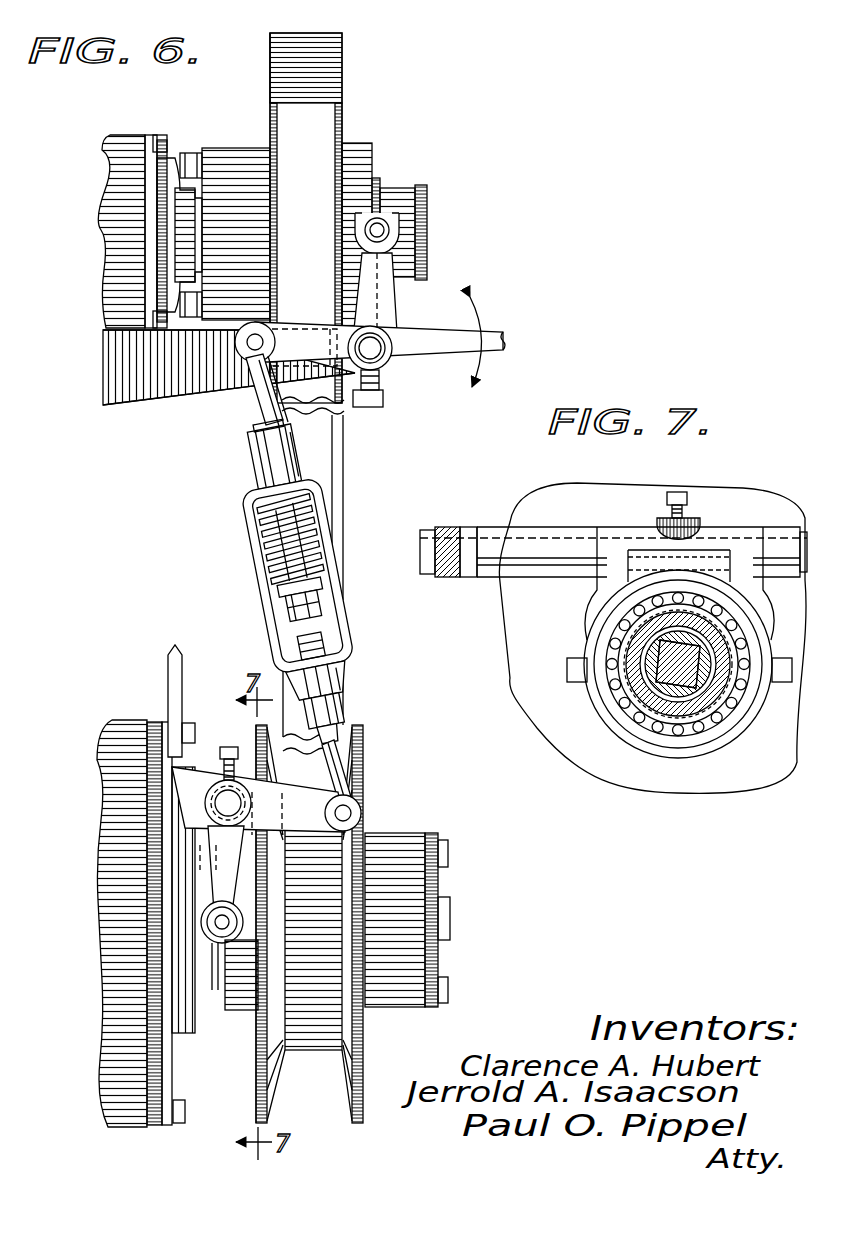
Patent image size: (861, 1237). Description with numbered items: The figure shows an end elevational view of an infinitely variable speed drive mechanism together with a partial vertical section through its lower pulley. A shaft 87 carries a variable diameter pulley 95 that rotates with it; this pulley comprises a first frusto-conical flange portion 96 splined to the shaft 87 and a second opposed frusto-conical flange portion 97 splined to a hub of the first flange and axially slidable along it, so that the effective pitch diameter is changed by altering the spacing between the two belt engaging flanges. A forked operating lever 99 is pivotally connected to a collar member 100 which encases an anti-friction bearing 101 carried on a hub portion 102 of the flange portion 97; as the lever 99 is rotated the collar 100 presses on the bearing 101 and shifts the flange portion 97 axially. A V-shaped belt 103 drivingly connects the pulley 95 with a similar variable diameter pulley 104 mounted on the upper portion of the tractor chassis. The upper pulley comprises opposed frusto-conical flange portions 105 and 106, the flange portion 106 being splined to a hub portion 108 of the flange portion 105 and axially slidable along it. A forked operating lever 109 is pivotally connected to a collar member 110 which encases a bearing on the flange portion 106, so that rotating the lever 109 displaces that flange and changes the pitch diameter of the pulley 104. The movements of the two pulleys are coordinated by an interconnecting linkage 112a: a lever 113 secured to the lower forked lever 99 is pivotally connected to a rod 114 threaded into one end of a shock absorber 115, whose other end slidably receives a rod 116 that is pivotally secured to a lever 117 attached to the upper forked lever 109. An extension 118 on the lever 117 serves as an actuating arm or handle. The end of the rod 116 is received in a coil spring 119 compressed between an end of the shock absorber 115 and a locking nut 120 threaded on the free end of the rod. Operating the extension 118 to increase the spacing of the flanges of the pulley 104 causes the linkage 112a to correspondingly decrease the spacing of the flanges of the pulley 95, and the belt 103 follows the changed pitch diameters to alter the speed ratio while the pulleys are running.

In FIG. 6, the variable diameter pulley 104 is at (356, 55).
In FIG. 6, the first flange portion 105 is at (272, 57).
In FIG. 6, the second flange portion 106 is at (343, 97).
In FIG. 6, the V-shaped belt 103 is at (320, 128).
In FIG. 6, the collar member 110 is at (377, 153).
In FIG. 6, the hub portion 108 is at (397, 193).
In FIG. 6, the forked operating lever 109 is at (385, 305).
In FIG. 6, the lever 117 is at (307, 337).
In FIG. 6, the extension 118 is at (443, 350).
In FIG. 6, the rod 116 is at (257, 423).
In FIG. 6, the interconnecting linkage 112a is at (275, 587).
In FIG. 6, the coil spring 119 is at (268, 527).
In FIG. 6, the locking nut 120 is at (320, 580).
In FIG. 6, the shock absorber 115 is at (350, 620).
In FIG. 6, the rod 114 is at (362, 768).
In FIG. 6, the variable diameter pulley 95 is at (380, 800).
In FIG. 6, the lever 113 is at (315, 833).
In FIG. 7, the lever 113 is at (447, 580).
In FIG. 6, the forked operating lever 99 is at (237, 880).
In FIG. 7, the forked operating lever 99 is at (595, 603).
In FIG. 6, the collar member 100 is at (243, 1010).
In FIG. 7, the collar member 100 is at (698, 752).
In FIG. 6, the first flange portion 96 is at (365, 1063).
In FIG. 6, the second flange portion 97 is at (258, 1103).
In FIG. 7, the shaft 87 is at (663, 678).
In FIG. 7, the hub portion 102 is at (660, 715).
In FIG. 7, the anti-friction bearing 101 is at (730, 715).